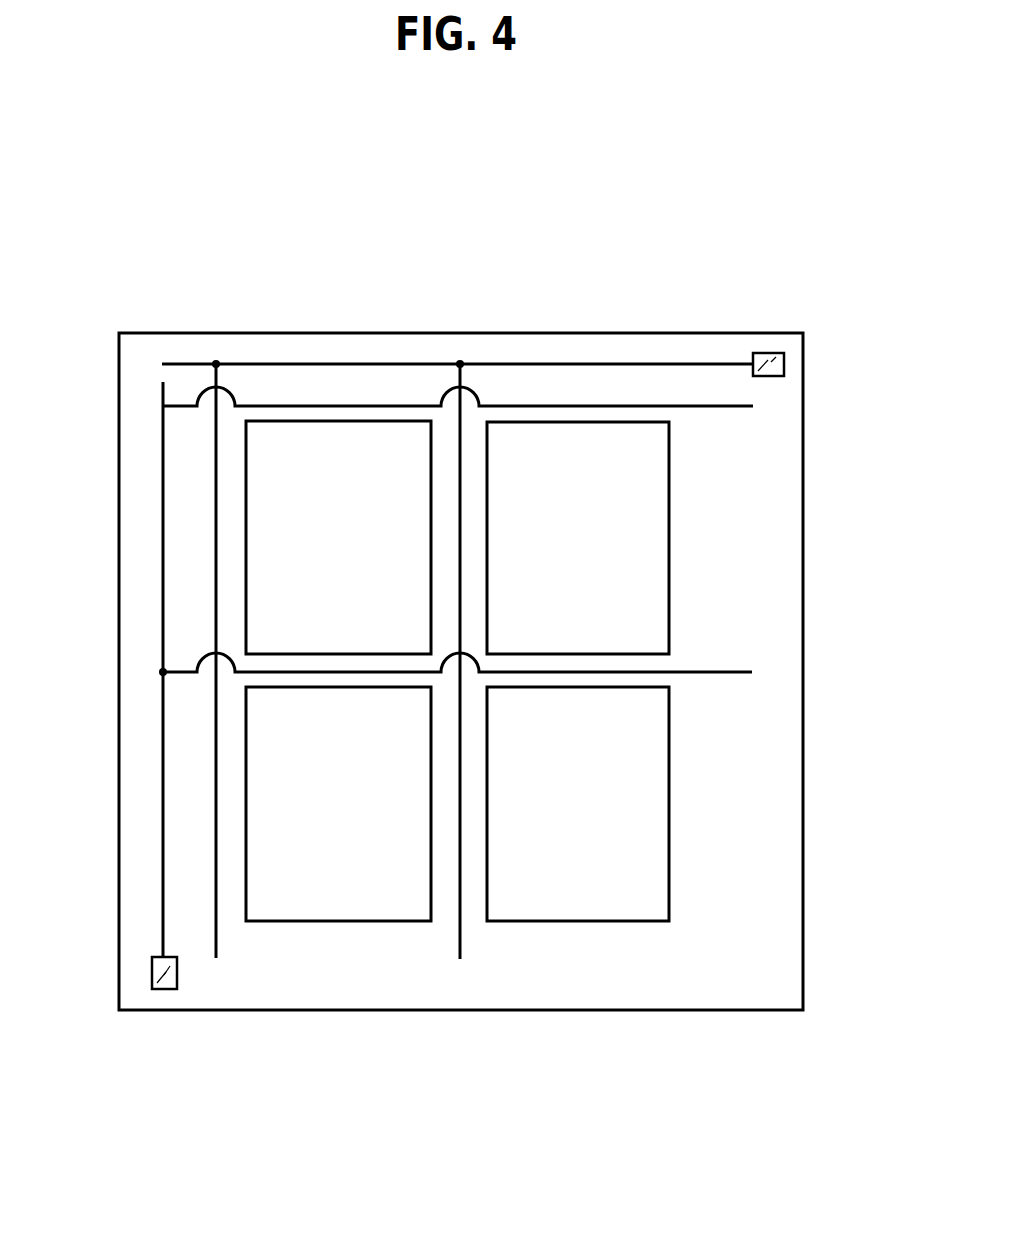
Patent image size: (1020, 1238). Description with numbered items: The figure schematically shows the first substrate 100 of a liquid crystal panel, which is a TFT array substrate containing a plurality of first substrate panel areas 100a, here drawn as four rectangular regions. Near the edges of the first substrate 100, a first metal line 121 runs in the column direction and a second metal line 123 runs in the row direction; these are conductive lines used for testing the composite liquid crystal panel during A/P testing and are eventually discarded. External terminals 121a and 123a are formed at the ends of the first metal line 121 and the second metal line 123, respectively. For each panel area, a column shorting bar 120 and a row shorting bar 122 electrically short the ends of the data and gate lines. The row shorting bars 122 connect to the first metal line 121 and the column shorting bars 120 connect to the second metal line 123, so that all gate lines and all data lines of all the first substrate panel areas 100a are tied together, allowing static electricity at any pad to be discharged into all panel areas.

The first substrate 100 is at (803, 582).
The first substrate panel areas 100a is at (245, 538).
The column shorting bar 120 is at (216, 958).
The first metal line 121 is at (163, 882).
The external terminal 121a is at (162, 989).
The row shorting bar 122 is at (720, 406).
The second metal line 123 is at (700, 362).
The external terminal 123a is at (784, 364).